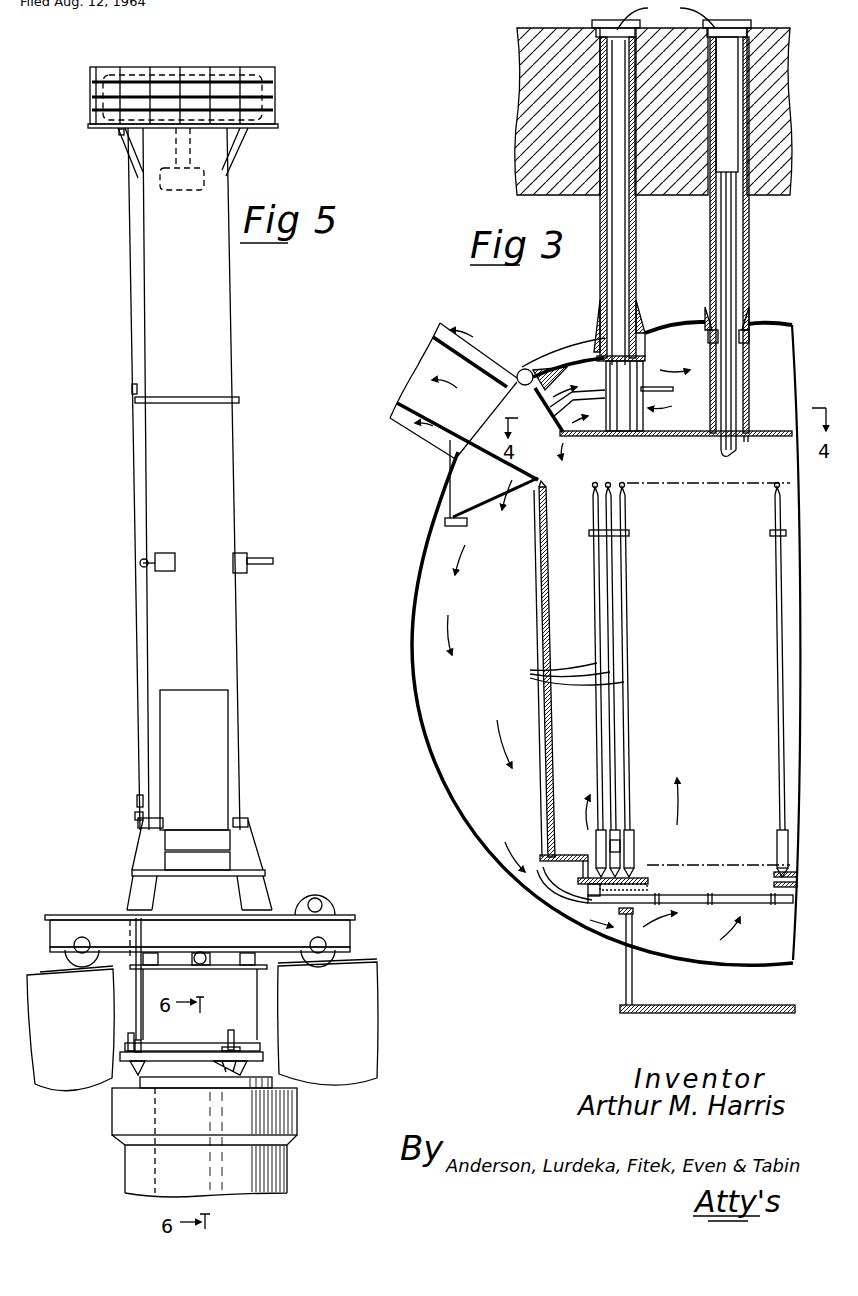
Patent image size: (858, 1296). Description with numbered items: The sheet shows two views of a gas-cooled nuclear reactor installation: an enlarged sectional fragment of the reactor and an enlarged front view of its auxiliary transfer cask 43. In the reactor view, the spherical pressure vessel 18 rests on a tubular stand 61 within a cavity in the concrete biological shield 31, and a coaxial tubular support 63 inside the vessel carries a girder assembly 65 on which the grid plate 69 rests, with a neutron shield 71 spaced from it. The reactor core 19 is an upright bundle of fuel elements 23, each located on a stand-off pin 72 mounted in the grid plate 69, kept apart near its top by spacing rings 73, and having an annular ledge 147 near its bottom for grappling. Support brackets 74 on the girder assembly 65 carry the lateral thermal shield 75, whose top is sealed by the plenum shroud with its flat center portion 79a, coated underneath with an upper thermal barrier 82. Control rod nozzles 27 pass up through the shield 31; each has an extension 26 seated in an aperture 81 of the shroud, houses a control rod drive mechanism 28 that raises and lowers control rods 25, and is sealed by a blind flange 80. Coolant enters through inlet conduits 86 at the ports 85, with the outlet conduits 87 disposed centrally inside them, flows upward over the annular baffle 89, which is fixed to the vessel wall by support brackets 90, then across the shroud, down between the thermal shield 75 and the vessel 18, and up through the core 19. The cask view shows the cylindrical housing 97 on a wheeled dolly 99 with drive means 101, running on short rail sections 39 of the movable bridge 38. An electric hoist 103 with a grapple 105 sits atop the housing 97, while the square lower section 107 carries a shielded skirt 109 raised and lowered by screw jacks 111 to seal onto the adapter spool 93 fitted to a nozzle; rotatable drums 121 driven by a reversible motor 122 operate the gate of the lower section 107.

In FIG. 3, the spherical pressure vessel 18 is at (413, 693).
In FIG. 3, the reactor core 19 is at (570, 609).
In FIG. 3, the fuel elements 23 is at (565, 673).
In FIG. 3, the control rods 25 is at (727, 452).
In FIG. 3, the extension 26 is at (653, 380).
In FIG. 3, the control rod nozzles 27 is at (712, 230).
In FIG. 3, the control rod drive mechanism 28 is at (723, 78).
In FIG. 3, the concrete biological shield 31 is at (522, 108).
In FIG. 5, the movable bridge 38 is at (365, 1006).
In FIG. 5, the short rail sections 39 is at (33, 971).
In FIG. 5, the auxiliary transfer cask 43 is at (236, 313).
In FIG. 3, the tubular stand 61 is at (627, 973).
In FIG. 3, the coaxial tubular support 63 is at (634, 936).
In FIG. 3, the girder assembly 65 is at (713, 900).
In FIG. 3, the grid plate 69 is at (797, 885).
In FIG. 3, the neutron shield 71 is at (634, 879).
In FIG. 3, the stand-off pins 72 is at (636, 851).
In FIG. 3, the spacing rings 73 is at (629, 533).
In FIG. 3, the support brackets 74 is at (560, 870).
In FIG. 3, the lateral thermal shield 75 is at (545, 811).
In FIG. 3, the flat center portion 79a is at (668, 430).
In FIG. 3, the blind flange 80 is at (666, 15).
In FIG. 3, the aperture 81 is at (613, 433).
In FIG. 3, the upper thermal barrier 82 is at (768, 437).
In FIG. 3, the ports 85 is at (524, 369).
In FIG. 3, the inlet conduits 86 is at (397, 403).
In FIG. 3, the outlet conduits 87 is at (428, 346).
In FIG. 3, the annular baffle 89 is at (593, 395).
In FIG. 3, the support brackets 90 is at (440, 540).
In FIG. 5, the adapter spool 93 is at (292, 1107).
In FIG. 5, the cask housing 97 is at (225, 438).
In FIG. 5, the wheeled dolly 99 is at (330, 918).
In FIG. 5, the drive means 101 is at (317, 897).
In FIG. 5, the electric hoist 103 is at (190, 80).
In FIG. 5, the grapple 105 is at (204, 179).
In FIG. 5, the lower section 107 is at (246, 996).
In FIG. 5, the shielded skirt 109 is at (258, 1070).
In FIG. 5, the screw jacks 111 is at (242, 1050).
In FIG. 5, the rotatable drums 121 is at (148, 958).
In FIG. 5, the reversible motor 122 is at (200, 956).
In FIG. 3, the annular ledge 147 is at (632, 846).